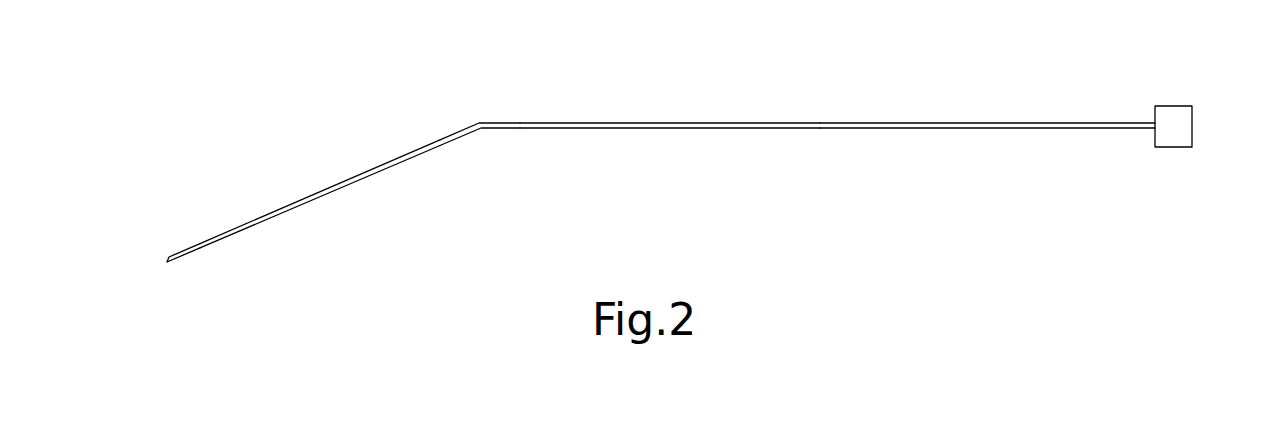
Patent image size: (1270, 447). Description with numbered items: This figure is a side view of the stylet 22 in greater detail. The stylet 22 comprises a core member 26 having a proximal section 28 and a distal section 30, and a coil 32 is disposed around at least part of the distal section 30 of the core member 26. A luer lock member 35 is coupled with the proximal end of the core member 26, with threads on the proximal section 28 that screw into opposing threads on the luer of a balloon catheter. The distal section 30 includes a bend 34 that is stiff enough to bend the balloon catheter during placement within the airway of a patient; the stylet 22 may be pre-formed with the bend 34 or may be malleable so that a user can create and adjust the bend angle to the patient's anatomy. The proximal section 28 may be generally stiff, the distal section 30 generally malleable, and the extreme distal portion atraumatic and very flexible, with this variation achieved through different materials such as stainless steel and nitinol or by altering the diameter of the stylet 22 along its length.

The stylet 22 is at (791, 85).
The core member 26 is at (575, 122).
The proximal section 28 is at (878, 124).
The distal section 30 is at (327, 190).
The coil 32 is at (170, 255).
The bend 34 is at (478, 125).
The luer lock member 35 is at (1175, 106).